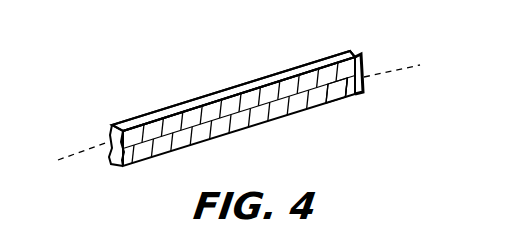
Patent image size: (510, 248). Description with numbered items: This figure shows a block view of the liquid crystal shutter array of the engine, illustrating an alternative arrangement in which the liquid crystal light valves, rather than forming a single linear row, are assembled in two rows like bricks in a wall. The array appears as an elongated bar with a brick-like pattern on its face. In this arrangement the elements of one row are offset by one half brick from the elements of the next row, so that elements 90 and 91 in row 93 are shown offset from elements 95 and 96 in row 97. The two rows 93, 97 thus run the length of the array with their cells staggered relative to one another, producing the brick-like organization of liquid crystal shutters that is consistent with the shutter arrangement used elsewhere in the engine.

The element 90 is at (333, 92).
The element 91 is at (352, 93).
The row 93 is at (410, 73).
The element 95 is at (339, 56).
The element 96 is at (323, 74).
The row 97 is at (69, 161).